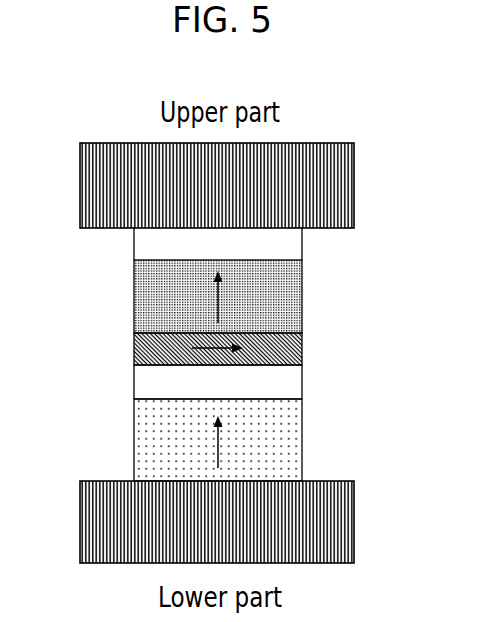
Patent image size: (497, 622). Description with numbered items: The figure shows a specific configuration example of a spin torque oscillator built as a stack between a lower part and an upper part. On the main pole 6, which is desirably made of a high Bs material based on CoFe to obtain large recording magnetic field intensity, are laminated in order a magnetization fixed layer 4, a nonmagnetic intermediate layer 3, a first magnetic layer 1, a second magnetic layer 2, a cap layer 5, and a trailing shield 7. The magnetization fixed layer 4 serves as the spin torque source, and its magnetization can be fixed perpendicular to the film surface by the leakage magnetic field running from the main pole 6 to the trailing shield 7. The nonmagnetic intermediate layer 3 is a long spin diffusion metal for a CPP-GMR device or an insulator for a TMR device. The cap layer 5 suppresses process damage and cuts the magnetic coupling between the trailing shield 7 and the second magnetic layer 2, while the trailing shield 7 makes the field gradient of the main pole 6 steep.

The first magnetic layer 1 is at (302, 348).
The second magnetic layer 2 is at (302, 288).
The nonmagnetic intermediate layer 3 is at (302, 388).
The magnetization fixed layer 4 is at (302, 452).
The cap layer 5 is at (134, 240).
The main pole 6 is at (354, 533).
The trailing shield 7 is at (354, 182).